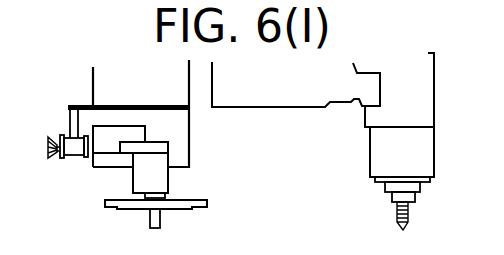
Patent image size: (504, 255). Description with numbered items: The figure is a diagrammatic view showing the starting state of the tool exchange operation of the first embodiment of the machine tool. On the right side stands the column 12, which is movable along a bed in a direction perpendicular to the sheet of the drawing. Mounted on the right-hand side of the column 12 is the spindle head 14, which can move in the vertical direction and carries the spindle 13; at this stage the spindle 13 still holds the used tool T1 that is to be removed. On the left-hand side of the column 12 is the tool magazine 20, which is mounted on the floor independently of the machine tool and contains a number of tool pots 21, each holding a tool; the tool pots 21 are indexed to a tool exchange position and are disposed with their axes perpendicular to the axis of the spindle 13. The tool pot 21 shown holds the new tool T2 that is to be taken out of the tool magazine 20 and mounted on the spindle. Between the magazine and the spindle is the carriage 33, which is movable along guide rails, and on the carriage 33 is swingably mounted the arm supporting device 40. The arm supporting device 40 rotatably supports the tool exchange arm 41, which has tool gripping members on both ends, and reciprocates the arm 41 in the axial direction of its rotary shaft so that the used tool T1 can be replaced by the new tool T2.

The column 12 is at (298, 100).
The spindle 13 is at (413, 188).
The spindle head 14 is at (428, 96).
The tool magazine 20 is at (191, 112).
The tool pot 21 is at (66, 141).
The carriage 33 is at (103, 152).
The arm supporting device 40 is at (164, 170).
The tool exchange arm 41 is at (180, 205).
The used tool T1 is at (408, 217).
The new tool T2 is at (50, 158).